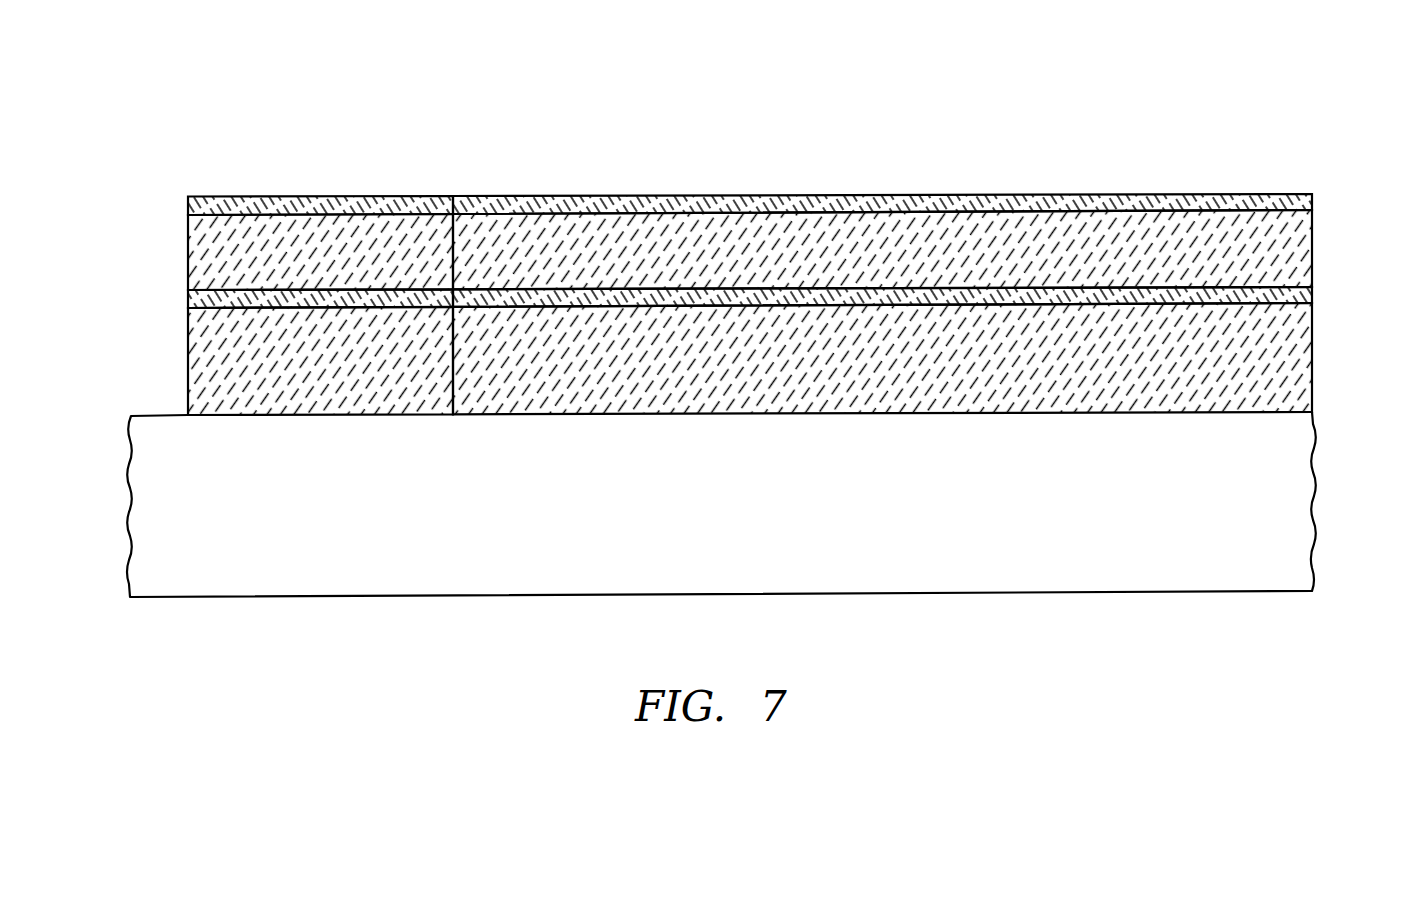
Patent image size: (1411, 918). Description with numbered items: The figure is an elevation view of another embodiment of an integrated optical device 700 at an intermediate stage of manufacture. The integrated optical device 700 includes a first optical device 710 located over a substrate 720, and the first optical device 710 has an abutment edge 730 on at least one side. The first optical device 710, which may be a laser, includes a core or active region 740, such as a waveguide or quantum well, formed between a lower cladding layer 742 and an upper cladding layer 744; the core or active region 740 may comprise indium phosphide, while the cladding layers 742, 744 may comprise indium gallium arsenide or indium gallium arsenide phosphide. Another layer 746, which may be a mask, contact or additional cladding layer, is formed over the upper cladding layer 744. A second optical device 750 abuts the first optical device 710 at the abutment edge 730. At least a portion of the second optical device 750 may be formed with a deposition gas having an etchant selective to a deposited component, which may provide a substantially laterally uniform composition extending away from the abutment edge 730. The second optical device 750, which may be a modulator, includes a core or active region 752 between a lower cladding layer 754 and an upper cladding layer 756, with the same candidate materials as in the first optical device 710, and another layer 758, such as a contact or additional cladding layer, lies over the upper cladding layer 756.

The integrated optical device 700 is at (313, 92).
The first optical device 710 is at (454, 465).
The substrate 720 is at (147, 490).
The abutment edge 730 is at (466, 362).
The core or active region 740 is at (200, 297).
The lower cladding layer 742 is at (198, 353).
The upper cladding layer 744 is at (200, 253).
The another layer 746 is at (198, 205).
The second optical device 750 is at (1294, 458).
The core or active region 752 is at (1302, 295).
The lower cladding layer 754 is at (1302, 352).
The upper cladding layer 756 is at (1302, 248).
The another layer 758 is at (1300, 202).